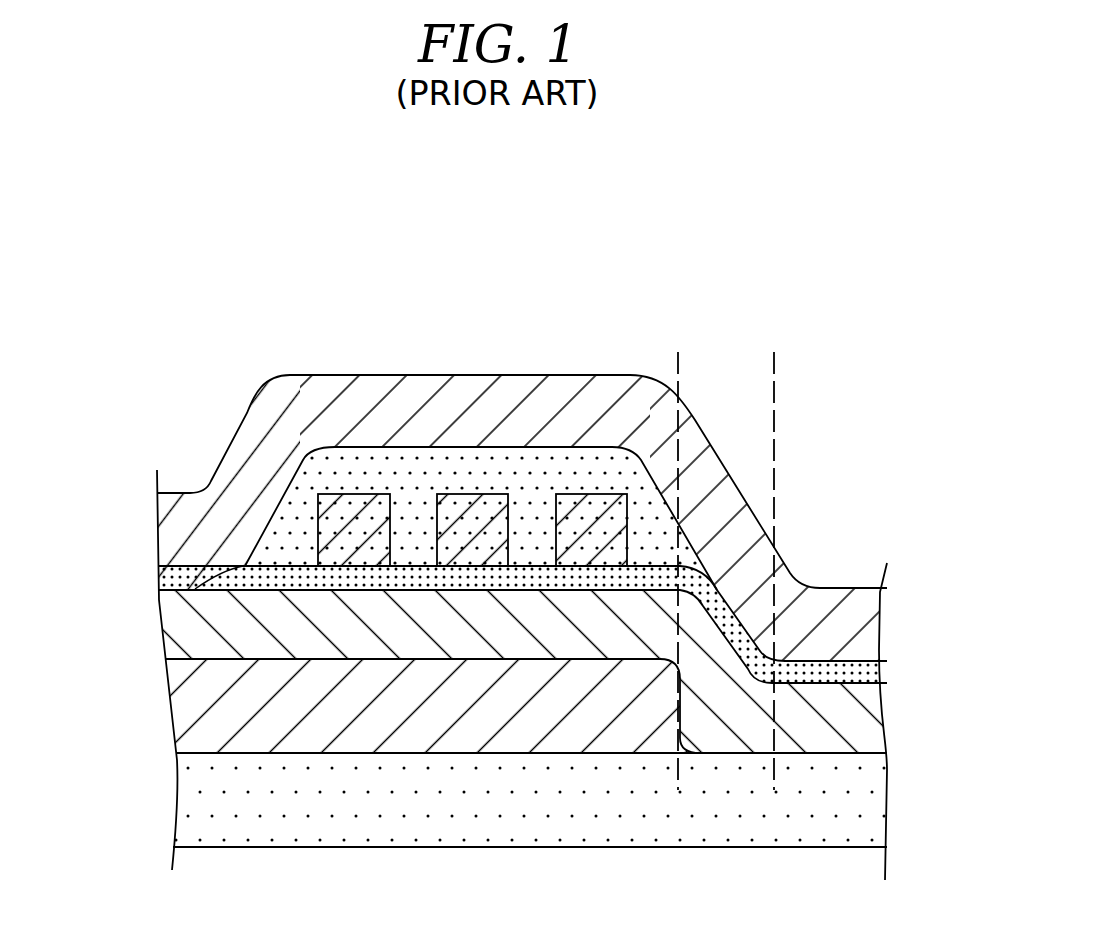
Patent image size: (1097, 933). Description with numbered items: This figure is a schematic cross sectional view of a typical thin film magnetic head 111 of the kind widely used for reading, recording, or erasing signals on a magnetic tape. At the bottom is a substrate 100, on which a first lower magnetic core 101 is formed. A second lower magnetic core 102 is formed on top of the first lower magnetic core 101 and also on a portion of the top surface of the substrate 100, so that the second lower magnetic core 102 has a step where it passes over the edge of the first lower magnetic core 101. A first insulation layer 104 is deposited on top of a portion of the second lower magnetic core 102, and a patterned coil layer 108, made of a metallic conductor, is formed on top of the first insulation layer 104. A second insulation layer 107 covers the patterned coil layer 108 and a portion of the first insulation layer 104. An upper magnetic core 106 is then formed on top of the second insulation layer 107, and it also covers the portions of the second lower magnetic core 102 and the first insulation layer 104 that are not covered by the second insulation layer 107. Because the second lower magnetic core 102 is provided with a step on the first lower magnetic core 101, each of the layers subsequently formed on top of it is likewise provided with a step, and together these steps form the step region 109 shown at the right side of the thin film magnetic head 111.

The substrate 100 is at (202, 803).
The first lower magnetic core 101 is at (182, 705).
The second lower magnetic core 102 is at (180, 620).
The first insulation layer 104 is at (175, 571).
The upper magnetic core 106 is at (176, 518).
The second insulation layer 107 is at (302, 489).
The patterned coil layer 108 is at (599, 510).
The step region 109 is at (677, 307).
The thin film magnetic head 111 is at (690, 192).